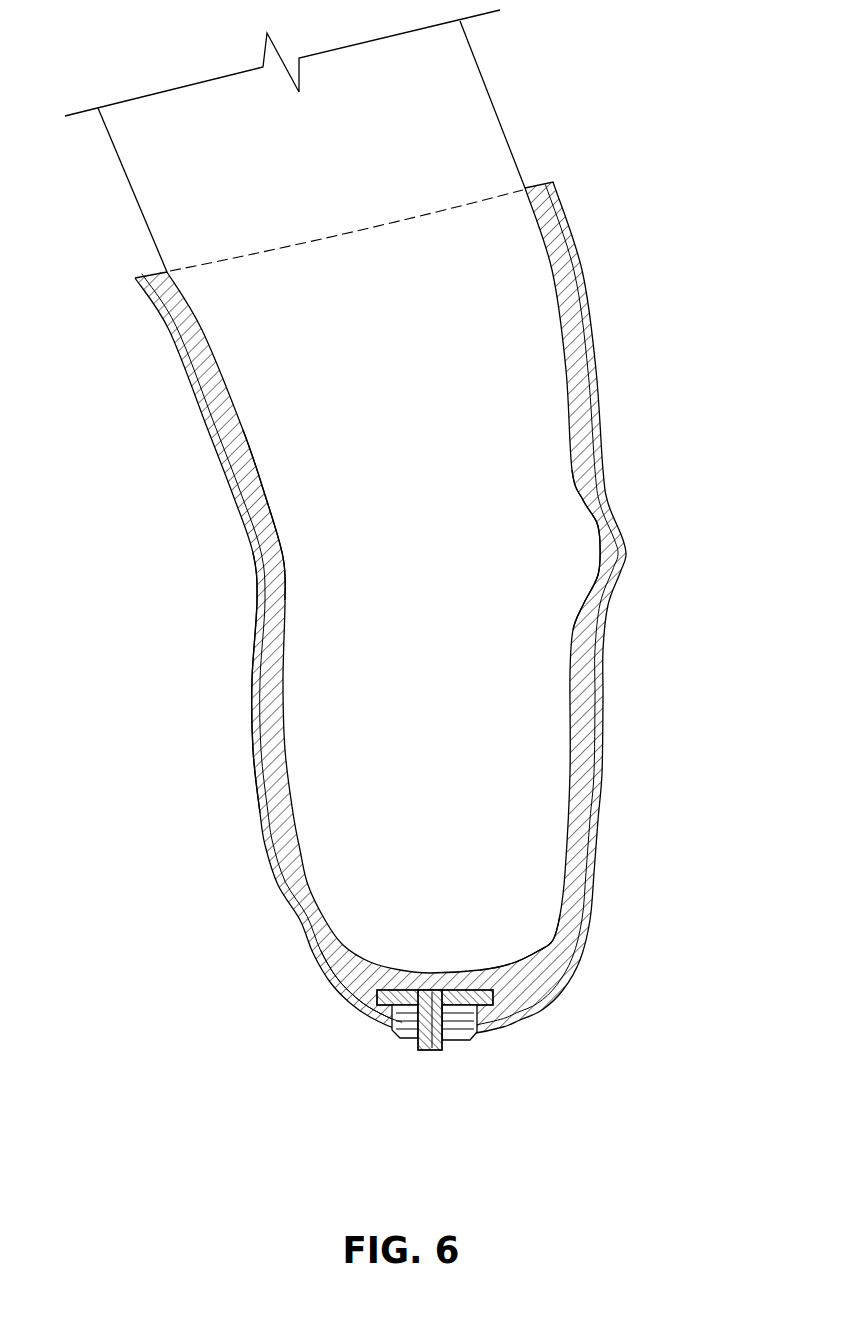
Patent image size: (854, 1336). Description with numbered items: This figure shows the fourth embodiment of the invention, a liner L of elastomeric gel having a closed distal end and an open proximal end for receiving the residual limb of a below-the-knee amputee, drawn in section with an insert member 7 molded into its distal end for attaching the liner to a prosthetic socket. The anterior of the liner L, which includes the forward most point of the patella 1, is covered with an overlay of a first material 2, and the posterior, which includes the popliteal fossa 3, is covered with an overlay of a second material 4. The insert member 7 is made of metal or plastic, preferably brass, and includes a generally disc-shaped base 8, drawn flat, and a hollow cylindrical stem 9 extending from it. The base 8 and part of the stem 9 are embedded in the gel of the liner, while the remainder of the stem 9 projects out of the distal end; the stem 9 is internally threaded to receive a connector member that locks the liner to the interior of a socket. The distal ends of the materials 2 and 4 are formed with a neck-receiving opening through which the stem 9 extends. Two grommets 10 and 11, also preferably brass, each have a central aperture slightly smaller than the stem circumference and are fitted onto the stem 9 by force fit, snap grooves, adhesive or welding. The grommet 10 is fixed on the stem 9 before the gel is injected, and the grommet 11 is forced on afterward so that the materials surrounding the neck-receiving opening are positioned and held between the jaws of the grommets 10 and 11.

The forward most point of the patella 1 is at (597, 557).
The first material 2 is at (600, 692).
The popliteal fossa 3 is at (284, 557).
The second material 4 is at (248, 708).
The liner L is at (583, 793).
The insert member 7 is at (518, 971).
The base 8 is at (444, 990).
The hollow cylindrical stem 9 is at (434, 1064).
The grommet 10 is at (352, 1010).
The grommet 11 is at (410, 1038).